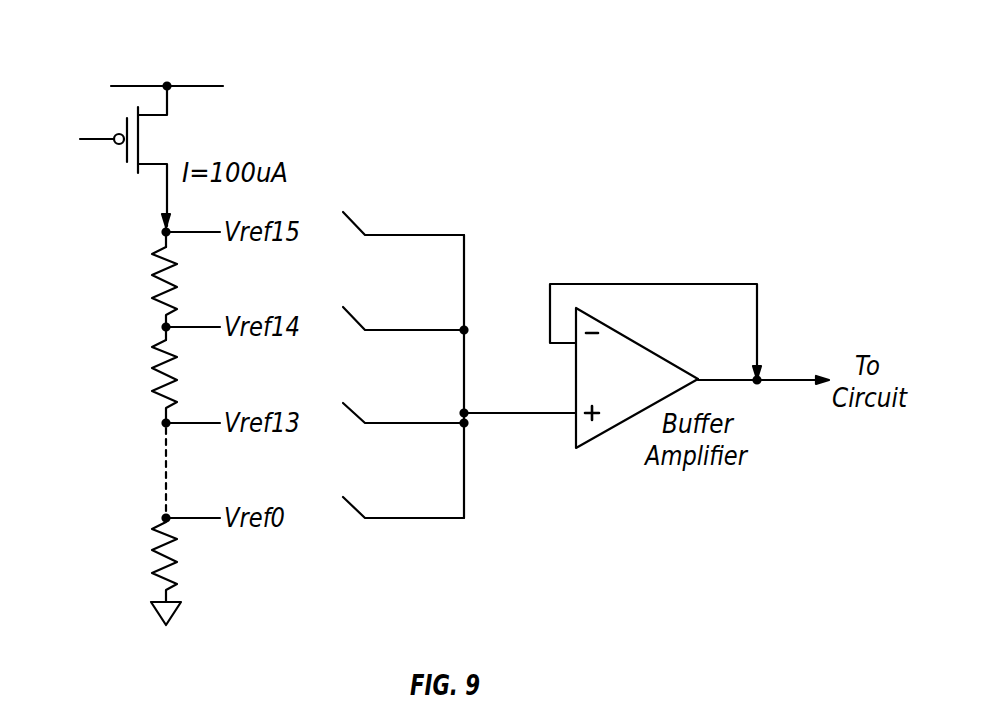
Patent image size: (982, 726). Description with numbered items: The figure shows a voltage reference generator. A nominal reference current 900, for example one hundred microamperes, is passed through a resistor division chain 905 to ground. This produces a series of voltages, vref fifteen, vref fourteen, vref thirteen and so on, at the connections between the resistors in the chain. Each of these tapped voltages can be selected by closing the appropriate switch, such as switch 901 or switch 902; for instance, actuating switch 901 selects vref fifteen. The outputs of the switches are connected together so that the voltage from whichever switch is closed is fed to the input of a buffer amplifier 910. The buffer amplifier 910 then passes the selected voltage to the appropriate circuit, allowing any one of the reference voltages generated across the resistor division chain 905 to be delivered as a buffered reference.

The nominal reference current 900 is at (98, 141).
The switch 901 is at (352, 222).
The switch 902 is at (352, 317).
The resistor division chain 905 is at (150, 442).
The buffer amplifier 910 is at (598, 441).